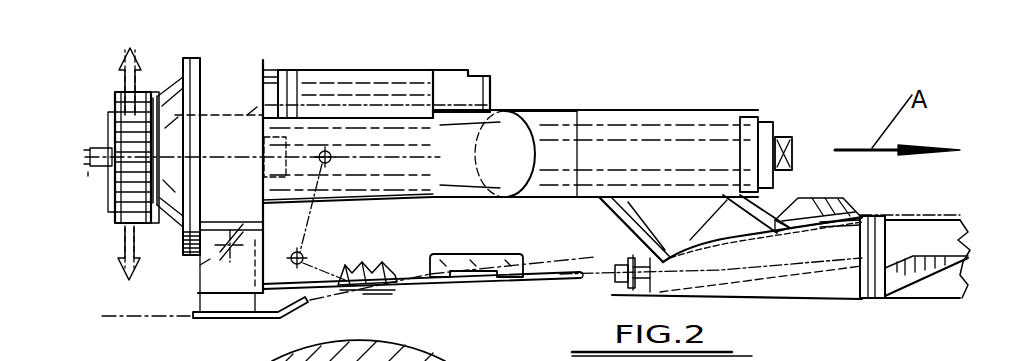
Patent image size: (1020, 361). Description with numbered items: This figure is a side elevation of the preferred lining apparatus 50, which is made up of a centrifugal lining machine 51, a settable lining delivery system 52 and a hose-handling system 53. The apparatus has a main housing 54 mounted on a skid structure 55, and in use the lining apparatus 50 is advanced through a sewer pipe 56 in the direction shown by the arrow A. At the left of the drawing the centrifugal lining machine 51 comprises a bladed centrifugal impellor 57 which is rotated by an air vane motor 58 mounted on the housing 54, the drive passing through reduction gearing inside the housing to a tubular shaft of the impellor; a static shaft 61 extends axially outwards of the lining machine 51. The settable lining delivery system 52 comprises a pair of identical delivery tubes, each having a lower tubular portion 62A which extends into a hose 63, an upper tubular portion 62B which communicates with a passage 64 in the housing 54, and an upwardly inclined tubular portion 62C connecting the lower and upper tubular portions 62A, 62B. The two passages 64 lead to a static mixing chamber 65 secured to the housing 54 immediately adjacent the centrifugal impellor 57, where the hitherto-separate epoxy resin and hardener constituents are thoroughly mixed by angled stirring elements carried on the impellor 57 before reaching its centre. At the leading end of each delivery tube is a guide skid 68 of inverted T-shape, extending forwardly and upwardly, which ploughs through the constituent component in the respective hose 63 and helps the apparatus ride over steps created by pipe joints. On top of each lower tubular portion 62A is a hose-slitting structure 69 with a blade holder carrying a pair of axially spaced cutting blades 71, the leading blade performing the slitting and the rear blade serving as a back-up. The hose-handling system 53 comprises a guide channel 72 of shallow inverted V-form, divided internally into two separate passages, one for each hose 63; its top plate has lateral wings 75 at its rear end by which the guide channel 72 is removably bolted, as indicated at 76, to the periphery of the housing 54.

The lining apparatus 50 is at (428, 74).
The centrifugal lining machine 51 is at (124, 94).
The settable lining delivery system 52 is at (620, 122).
The hose-handling system 53 is at (462, 284).
The main housing 54 is at (232, 88).
The skid structure 55 is at (228, 318).
The sewer pipe 56 is at (394, 350).
The bladed centrifugal impellor 57 is at (122, 226).
The air vane motor 58 is at (322, 90).
The static shaft 61 is at (100, 156).
The lower tubular portion 62A is at (765, 282).
The upper tubular portion 62B is at (540, 114).
The upwardly inclined tubular portion 62C is at (742, 226).
The hose 63 is at (968, 222).
The passage 64 is at (293, 82).
The static mixing chamber 65 is at (263, 64).
The guide skid 68 is at (910, 270).
The hose-slitting structure 69 is at (843, 199).
The cutting blades 71 is at (862, 218).
The guide channel 72 is at (388, 286).
The lateral wings 75 is at (203, 265).
The bolting 76 is at (230, 247).